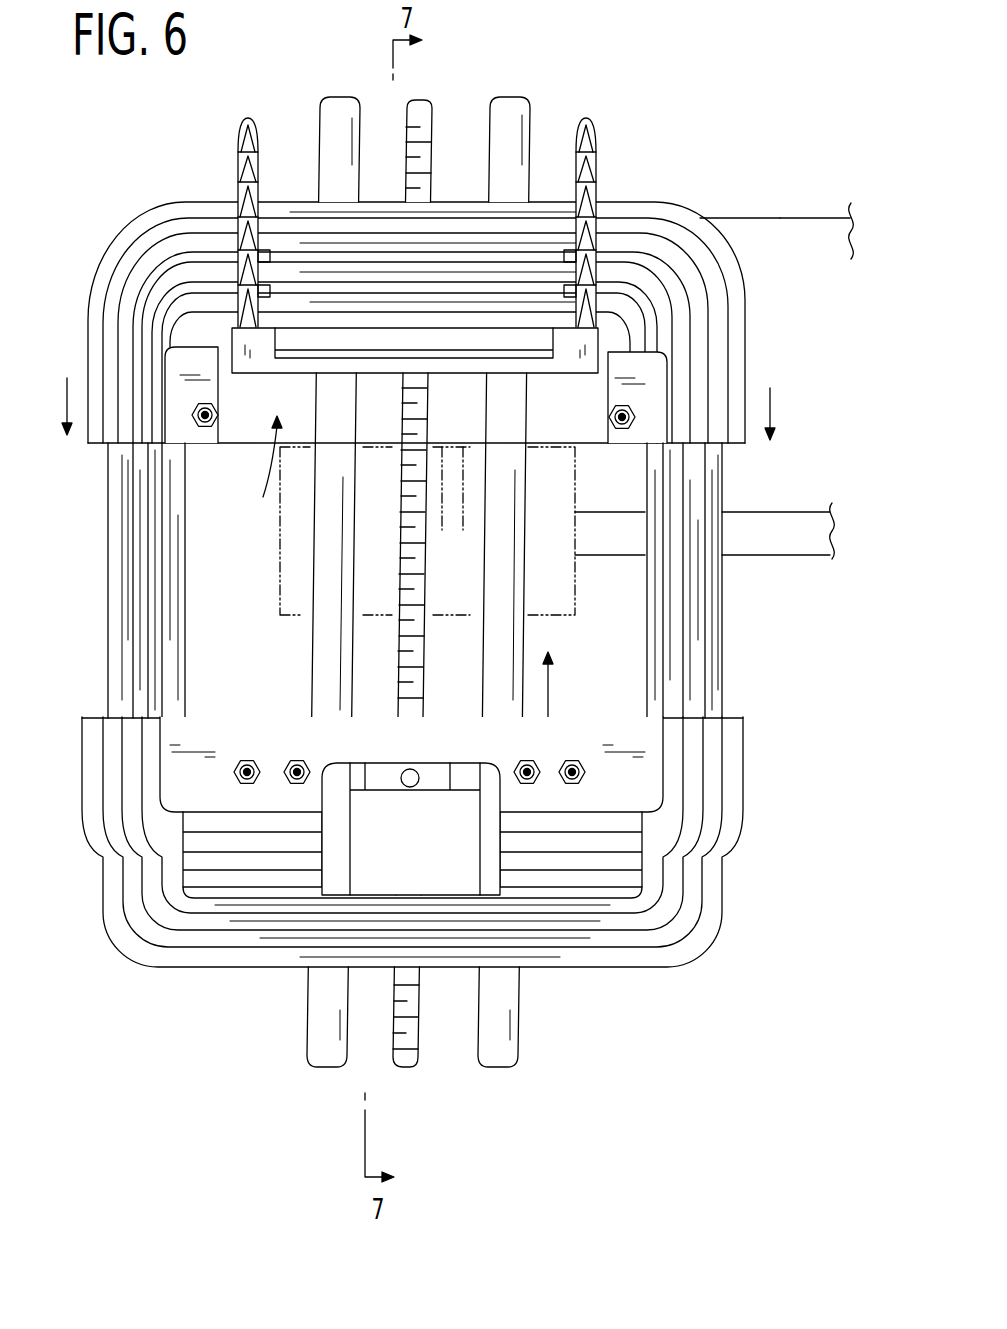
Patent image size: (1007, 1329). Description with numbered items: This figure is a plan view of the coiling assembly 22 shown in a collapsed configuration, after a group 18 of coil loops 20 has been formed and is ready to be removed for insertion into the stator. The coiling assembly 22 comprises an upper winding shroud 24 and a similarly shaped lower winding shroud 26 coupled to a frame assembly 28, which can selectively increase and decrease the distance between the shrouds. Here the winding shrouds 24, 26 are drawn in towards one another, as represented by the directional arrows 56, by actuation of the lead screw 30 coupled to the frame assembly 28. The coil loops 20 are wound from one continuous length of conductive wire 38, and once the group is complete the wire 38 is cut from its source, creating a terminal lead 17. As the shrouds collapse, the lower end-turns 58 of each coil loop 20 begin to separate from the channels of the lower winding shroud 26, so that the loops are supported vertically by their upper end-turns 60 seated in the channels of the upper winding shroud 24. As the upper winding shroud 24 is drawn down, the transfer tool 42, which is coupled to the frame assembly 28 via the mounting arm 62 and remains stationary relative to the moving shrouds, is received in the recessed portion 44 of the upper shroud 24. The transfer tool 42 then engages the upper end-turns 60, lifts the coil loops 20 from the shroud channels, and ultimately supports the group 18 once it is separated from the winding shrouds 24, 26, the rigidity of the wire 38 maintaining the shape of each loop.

The terminal lead 17 is at (788, 222).
The group of coil windings 18 is at (758, 690).
The coil loop 20 is at (170, 697).
The coiling assembly 22 is at (684, 92).
The upper winding shroud 24 is at (745, 350).
The lower winding shroud 26 is at (750, 813).
The frame assembly 28 is at (349, 92).
The lead screw 30 is at (400, 676).
The conductive wire 38 is at (772, 217).
The transfer tool 42 is at (270, 368).
The recessed portion 44 is at (405, 515).
The directional arrows 56 is at (775, 410).
The lower end-turns 58 is at (662, 985).
The upper end-turns 60 is at (642, 183).
The mounting arm 62 is at (452, 530).